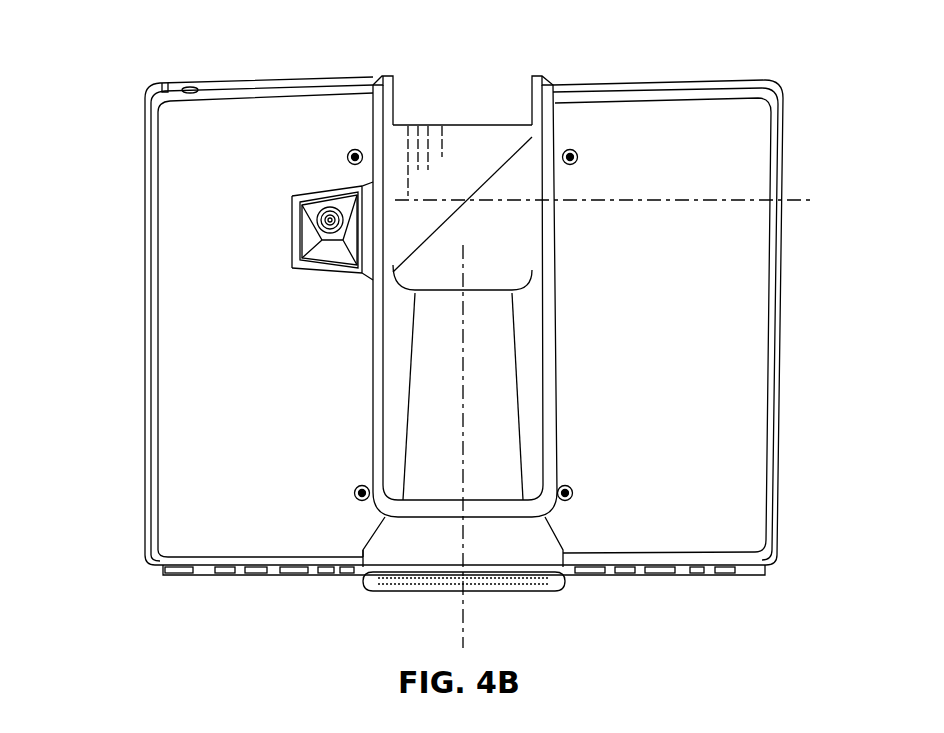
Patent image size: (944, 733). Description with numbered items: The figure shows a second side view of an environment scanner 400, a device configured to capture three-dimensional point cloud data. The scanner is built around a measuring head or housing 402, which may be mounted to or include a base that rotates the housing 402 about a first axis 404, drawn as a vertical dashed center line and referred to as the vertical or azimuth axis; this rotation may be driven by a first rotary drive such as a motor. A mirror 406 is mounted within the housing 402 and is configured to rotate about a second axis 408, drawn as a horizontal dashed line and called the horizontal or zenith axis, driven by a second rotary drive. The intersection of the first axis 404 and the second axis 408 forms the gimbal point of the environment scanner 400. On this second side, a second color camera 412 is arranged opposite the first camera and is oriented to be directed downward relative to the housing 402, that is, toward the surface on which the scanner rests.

The environment scanner 400 is at (148, 28).
The housing 402 is at (765, 322).
The first axis 404 is at (465, 612).
The mirror 406 is at (455, 132).
The second axis 408 is at (800, 200).
The second color camera 412 is at (297, 233).